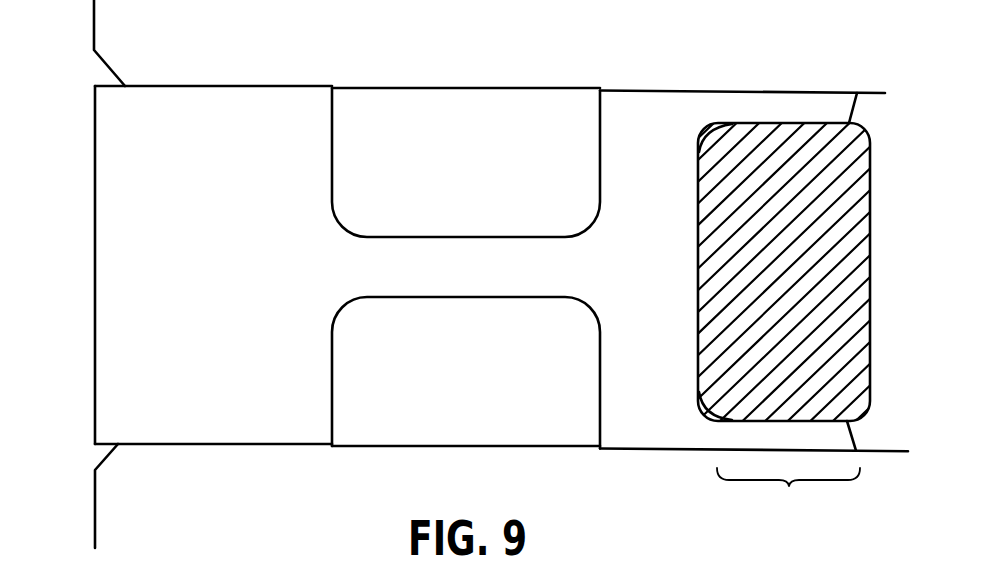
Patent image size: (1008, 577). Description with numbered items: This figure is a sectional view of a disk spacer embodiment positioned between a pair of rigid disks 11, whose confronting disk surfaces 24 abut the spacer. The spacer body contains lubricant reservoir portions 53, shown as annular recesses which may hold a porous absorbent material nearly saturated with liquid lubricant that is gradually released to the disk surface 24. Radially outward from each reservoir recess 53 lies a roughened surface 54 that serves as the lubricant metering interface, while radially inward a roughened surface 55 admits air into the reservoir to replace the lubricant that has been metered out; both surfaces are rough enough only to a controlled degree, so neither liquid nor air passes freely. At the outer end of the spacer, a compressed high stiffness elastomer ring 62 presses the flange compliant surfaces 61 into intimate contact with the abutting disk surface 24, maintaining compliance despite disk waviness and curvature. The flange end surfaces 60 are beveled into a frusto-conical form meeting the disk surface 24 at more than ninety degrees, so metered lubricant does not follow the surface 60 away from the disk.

The rigid disk 11 is at (151, 40).
The disk surface 24 is at (889, 453).
The lubricant reservoir portion 53 is at (477, 187).
The roughened surface radially outward from the reservoir 54 is at (655, 90).
The roughened surface radially inward from the reservoir 55 is at (244, 84).
The flange end surface 60 is at (857, 102).
The flange compliant surface 61 is at (788, 494).
The compressed high stiffness elastomer ring 62 is at (869, 297).